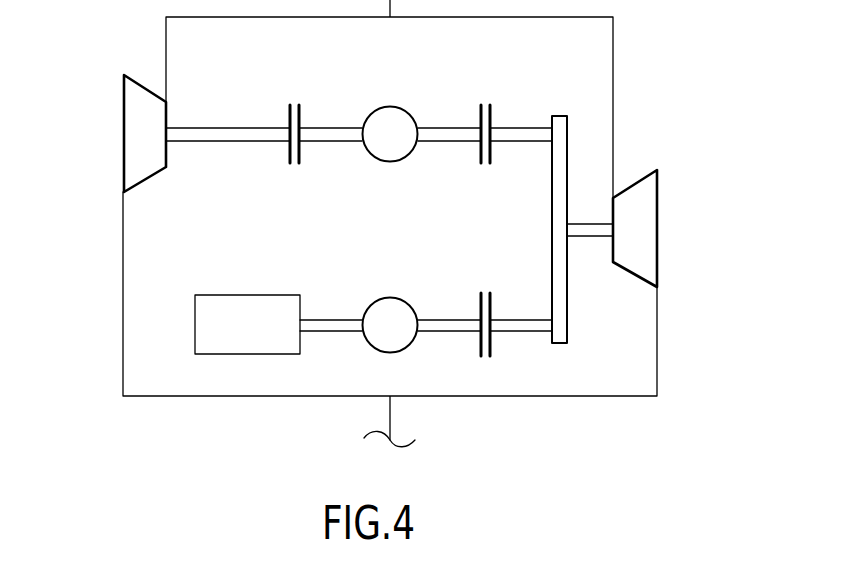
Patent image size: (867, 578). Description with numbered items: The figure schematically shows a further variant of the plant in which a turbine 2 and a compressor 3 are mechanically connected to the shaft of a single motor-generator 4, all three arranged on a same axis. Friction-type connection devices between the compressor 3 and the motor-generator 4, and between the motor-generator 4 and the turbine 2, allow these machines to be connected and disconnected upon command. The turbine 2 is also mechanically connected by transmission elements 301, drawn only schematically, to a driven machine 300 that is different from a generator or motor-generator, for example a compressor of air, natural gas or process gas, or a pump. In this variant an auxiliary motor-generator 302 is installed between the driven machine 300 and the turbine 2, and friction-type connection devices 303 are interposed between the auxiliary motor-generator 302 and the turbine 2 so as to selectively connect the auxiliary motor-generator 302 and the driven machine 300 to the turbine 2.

The turbine 2 is at (635, 223).
The compressor 3 is at (139, 122).
The motor-generator 4 is at (392, 128).
The driven machine 300 is at (240, 313).
The transmission elements 301 is at (559, 178).
The auxiliary motor-generator 302 is at (388, 320).
The connection devices 303 is at (487, 354).